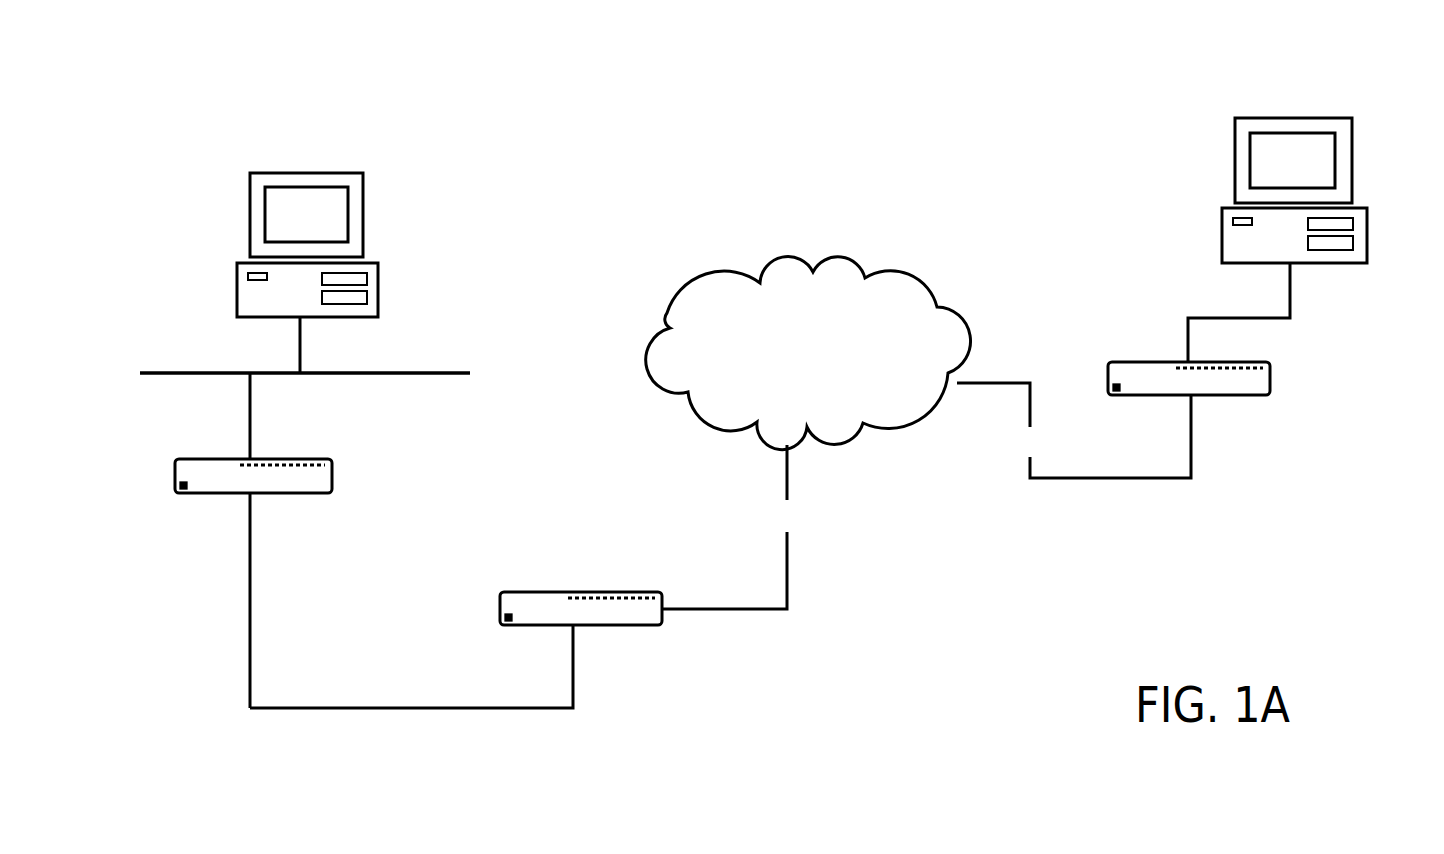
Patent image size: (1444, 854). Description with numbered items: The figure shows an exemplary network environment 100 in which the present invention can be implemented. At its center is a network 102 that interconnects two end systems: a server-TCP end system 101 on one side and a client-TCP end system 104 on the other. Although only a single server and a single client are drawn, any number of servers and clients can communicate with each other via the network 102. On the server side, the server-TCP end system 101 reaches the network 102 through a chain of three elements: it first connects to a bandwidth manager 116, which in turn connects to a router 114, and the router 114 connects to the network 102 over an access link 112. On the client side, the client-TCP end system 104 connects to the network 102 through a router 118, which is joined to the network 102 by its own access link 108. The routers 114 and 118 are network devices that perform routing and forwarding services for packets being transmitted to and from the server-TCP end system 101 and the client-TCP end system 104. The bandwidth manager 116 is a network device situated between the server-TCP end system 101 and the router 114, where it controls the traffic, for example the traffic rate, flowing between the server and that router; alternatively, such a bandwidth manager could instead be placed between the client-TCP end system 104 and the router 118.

The network environment 100 is at (903, 118).
The server-TCP end system 101 is at (250, 218).
The network 102 is at (667, 316).
The client-TCP end system 104 is at (1235, 163).
The access link 108 is at (988, 462).
The access link 112 is at (755, 535).
The router 114 is at (500, 609).
The bandwidth manager 116 is at (175, 475).
The router 118 is at (1108, 373).